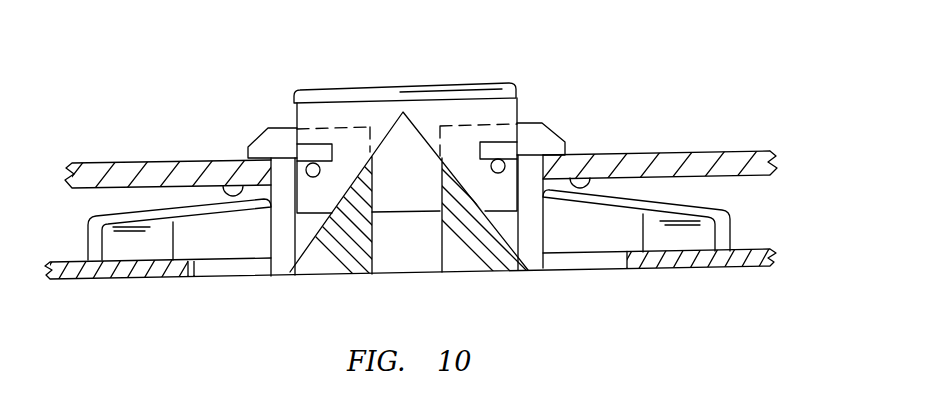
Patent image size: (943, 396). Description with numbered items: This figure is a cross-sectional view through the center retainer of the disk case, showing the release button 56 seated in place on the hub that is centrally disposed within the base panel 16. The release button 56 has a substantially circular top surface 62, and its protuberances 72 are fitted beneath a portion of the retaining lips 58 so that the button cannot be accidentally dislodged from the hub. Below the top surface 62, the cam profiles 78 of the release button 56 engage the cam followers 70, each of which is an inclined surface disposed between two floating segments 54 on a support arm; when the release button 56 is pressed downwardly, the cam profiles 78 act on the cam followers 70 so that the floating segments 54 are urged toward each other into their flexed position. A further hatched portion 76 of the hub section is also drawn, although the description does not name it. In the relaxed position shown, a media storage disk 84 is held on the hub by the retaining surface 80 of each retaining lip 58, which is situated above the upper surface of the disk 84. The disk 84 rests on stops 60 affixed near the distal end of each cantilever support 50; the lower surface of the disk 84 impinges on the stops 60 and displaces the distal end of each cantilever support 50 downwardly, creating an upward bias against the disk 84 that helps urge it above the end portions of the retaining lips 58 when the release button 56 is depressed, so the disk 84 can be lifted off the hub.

The base panel 16 is at (751, 248).
The cantilever support 50 is at (163, 205).
The media storage disk 84 is at (617, 153).
The stop 60 is at (243, 186).
The release button 56 is at (401, 185).
The top surface 62 is at (370, 85).
The retaining lip 58 is at (258, 139).
The floating segment 54 is at (282, 127).
The cam profile 78 is at (385, 138).
The cam follower 70 is at (314, 240).
The right wedge 76 is at (503, 230).
The protuberance 72 is at (309, 178).
The retaining surface 80 is at (528, 158).